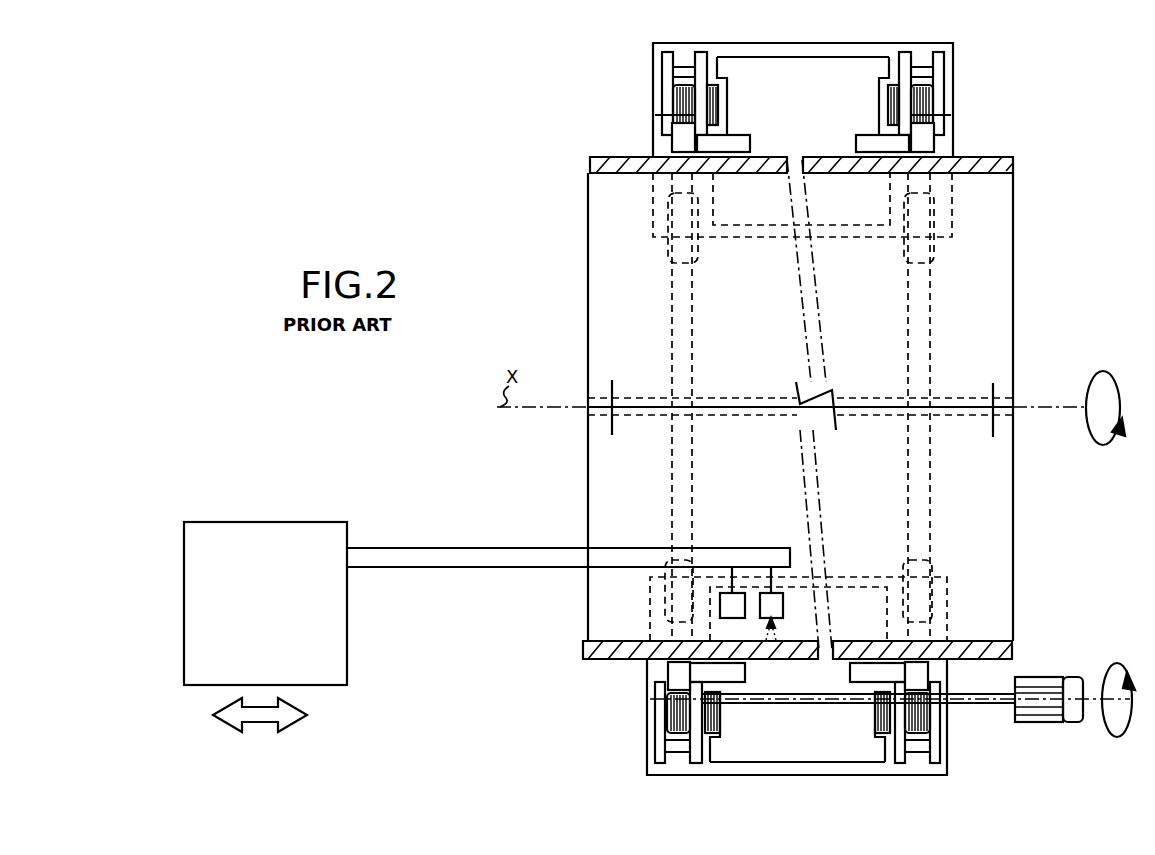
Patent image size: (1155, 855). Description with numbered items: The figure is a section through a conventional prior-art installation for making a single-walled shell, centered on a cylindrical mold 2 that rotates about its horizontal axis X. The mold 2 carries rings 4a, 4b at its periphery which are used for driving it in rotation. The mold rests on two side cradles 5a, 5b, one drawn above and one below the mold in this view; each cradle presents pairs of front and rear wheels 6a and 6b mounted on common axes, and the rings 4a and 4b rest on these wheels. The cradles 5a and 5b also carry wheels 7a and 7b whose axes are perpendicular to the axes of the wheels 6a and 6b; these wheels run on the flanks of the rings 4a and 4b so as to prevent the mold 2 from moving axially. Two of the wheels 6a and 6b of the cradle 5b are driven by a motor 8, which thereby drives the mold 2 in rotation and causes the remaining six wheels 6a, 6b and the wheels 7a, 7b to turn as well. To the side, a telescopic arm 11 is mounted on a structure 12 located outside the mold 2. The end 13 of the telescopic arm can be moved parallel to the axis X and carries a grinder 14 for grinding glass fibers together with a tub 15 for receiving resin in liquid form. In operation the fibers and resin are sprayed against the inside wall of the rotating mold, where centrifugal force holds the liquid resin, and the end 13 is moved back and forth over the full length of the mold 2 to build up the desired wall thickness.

The cylindrical mold 2 is at (590, 162).
The ring 4a is at (680, 132).
The ring 4b is at (925, 132).
The side cradle 5a is at (997, 63).
The side cradle 5b is at (968, 769).
The front wheel 6a is at (690, 103).
The rear wheel 6b is at (918, 103).
The wheel 7a is at (743, 137).
The wheel 7b is at (862, 137).
The motor 8 is at (1048, 712).
The telescopic arm 11 is at (452, 555).
The structure 12 is at (265, 612).
The end of the telescopic arm 13 is at (770, 555).
The grinder 14 is at (720, 606).
The tub 15 is at (783, 606).